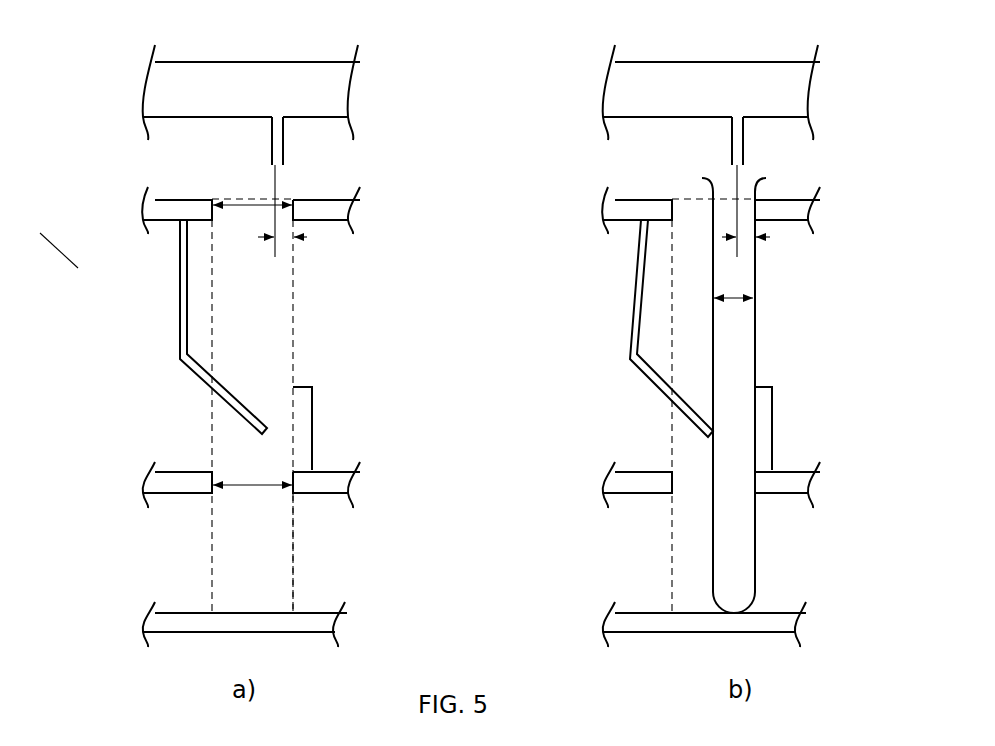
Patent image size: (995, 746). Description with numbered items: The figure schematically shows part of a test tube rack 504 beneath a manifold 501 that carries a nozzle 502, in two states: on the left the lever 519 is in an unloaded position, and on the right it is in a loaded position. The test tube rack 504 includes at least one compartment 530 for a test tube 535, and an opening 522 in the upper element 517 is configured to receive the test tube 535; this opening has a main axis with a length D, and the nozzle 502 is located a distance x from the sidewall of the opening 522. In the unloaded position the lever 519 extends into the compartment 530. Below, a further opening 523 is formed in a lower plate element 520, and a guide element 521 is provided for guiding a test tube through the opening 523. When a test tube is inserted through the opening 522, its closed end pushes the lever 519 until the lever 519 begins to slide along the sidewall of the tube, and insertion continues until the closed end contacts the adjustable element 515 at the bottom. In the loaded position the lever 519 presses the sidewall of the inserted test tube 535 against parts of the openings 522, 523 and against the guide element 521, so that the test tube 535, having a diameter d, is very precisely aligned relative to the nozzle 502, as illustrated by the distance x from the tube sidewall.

The manifold 501 is at (278, 62).
The nozzle 502 is at (272, 137).
The test tube rack 504 is at (76, 266).
The adjustable element 515 is at (200, 635).
The upper element 517 is at (305, 199).
The lever 519 is at (180, 358).
The lower electrode plate 520 is at (200, 497).
The guide element 521 is at (312, 397).
The opening 522 is at (239, 220).
The opening 523 is at (246, 501).
The compartment 530 is at (295, 300).
The test tube 535 is at (755, 312).